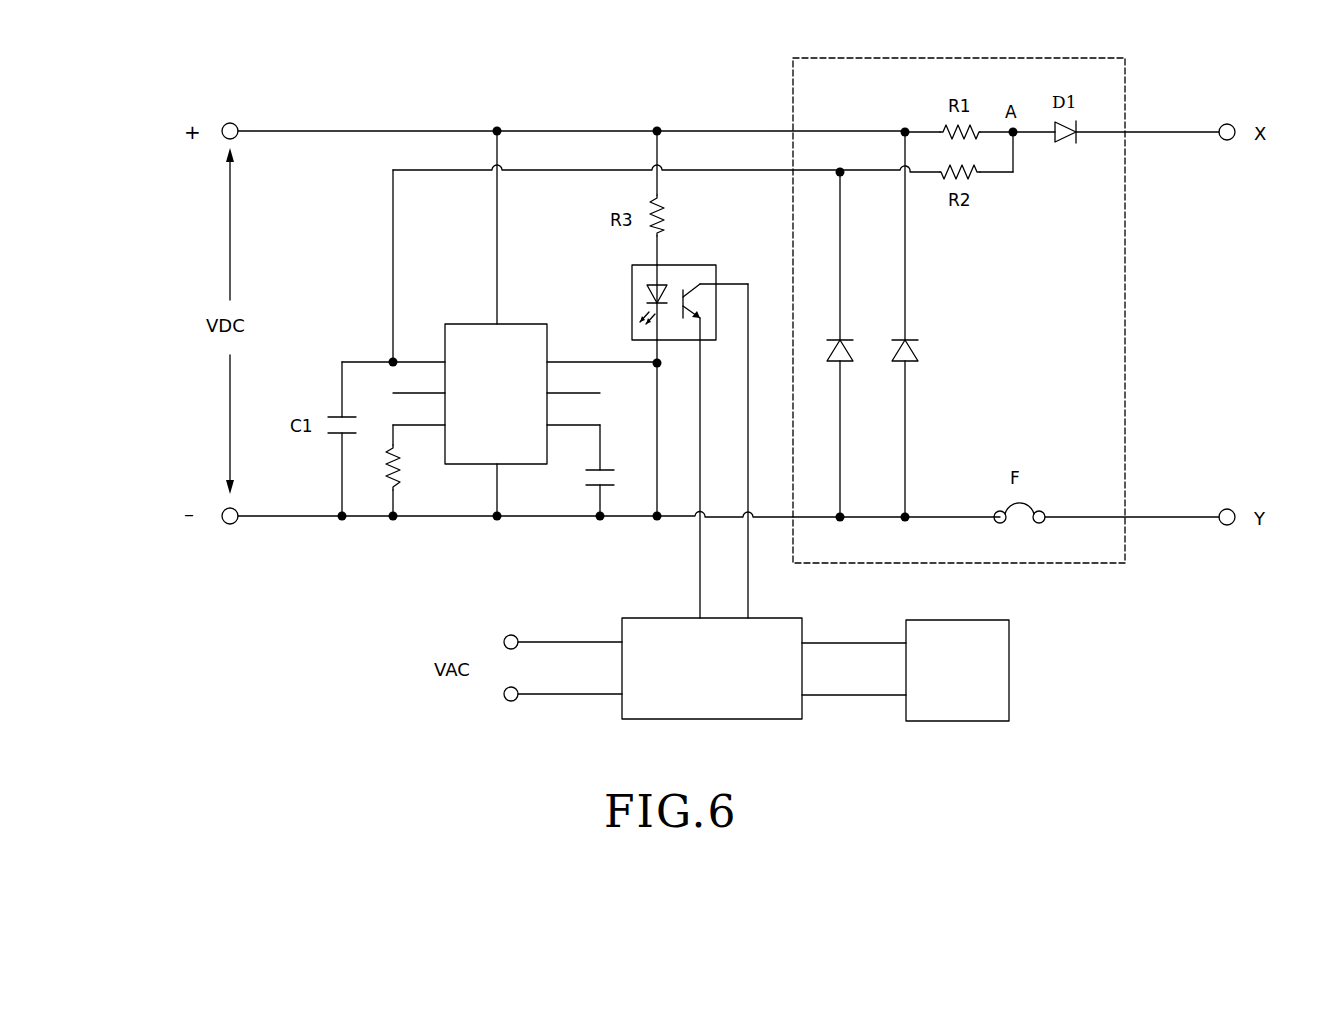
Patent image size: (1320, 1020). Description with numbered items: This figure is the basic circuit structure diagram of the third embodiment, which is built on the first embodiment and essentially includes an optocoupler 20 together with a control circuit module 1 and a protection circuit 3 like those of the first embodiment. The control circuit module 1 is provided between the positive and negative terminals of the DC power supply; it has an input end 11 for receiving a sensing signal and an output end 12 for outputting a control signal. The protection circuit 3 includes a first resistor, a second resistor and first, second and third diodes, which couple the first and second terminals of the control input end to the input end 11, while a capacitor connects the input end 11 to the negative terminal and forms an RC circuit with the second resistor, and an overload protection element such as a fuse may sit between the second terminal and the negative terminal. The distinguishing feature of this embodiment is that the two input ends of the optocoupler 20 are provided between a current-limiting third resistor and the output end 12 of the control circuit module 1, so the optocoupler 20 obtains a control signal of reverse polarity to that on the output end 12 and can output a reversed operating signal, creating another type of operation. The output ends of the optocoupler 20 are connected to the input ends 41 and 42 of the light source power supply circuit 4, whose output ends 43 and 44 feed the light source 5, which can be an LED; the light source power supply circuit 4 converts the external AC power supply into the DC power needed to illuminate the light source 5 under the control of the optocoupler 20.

The control circuit module 1 is at (472, 322).
The input end 11 is at (419, 350).
The output end 12 is at (602, 350).
The optocoupler 20 is at (632, 292).
The protection circuit 3 is at (1117, 565).
The light source power supply circuit 4 is at (622, 624).
The input end 41 is at (688, 468).
The input end 42 is at (738, 451).
The output end 43 is at (854, 632).
The output end 44 is at (854, 709).
The light source 5 is at (1009, 658).